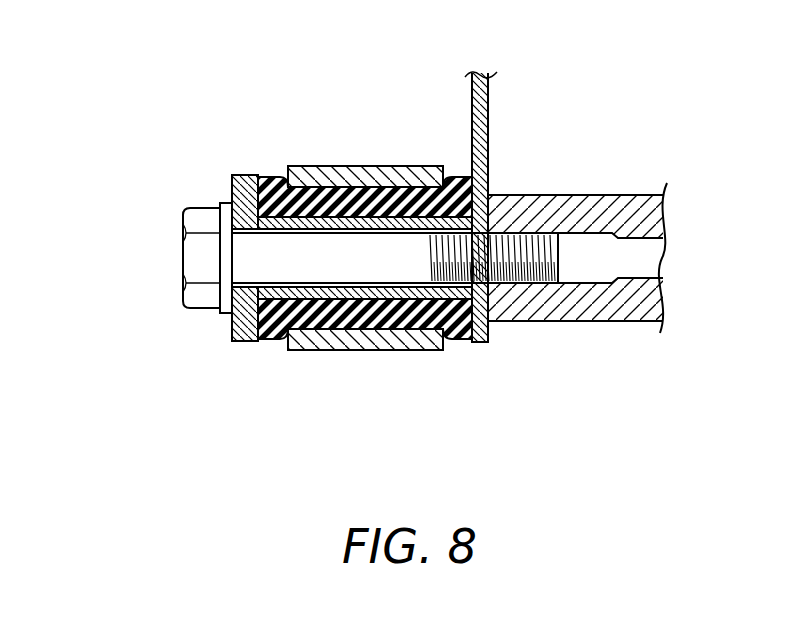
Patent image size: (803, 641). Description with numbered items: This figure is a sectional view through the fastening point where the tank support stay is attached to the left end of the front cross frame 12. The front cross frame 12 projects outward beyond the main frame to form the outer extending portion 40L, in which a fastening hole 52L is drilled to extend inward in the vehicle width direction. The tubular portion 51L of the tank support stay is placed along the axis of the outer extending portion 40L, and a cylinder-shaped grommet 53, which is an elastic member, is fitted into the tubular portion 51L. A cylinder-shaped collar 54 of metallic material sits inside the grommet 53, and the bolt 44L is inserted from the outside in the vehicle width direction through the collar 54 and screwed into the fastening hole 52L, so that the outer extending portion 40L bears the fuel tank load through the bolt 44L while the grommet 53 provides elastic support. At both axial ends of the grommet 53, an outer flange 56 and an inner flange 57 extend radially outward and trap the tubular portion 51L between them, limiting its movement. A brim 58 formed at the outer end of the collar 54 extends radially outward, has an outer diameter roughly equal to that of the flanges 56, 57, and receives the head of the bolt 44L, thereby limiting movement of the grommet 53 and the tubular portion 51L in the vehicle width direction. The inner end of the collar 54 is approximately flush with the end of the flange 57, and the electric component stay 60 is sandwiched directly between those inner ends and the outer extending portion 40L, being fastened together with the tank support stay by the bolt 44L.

The bolt 44L is at (195, 257).
The fastening hole 52L is at (513, 282).
The brim 58 is at (242, 341).
The collar 54 is at (322, 184).
The tubular portion 51L is at (362, 166).
The grommet 53 is at (361, 179).
The flange 56 is at (271, 176).
The flange 57 is at (443, 198).
The electric component stay 60 is at (488, 128).
The outer extending portion 40L is at (537, 207).
The front cross frame 12 is at (578, 214).